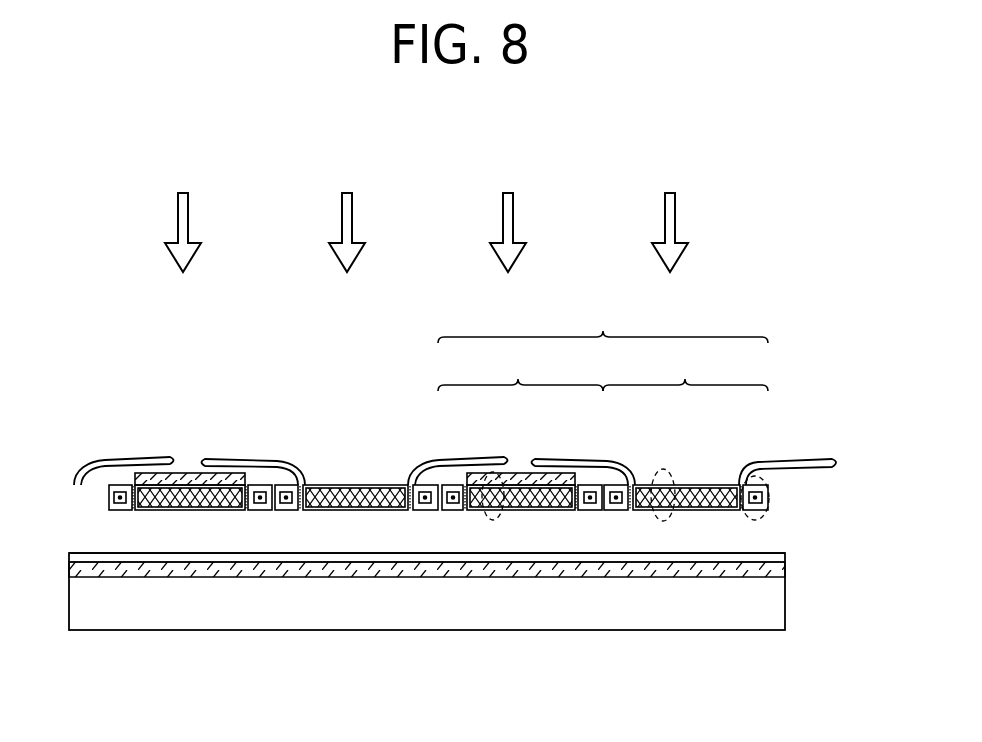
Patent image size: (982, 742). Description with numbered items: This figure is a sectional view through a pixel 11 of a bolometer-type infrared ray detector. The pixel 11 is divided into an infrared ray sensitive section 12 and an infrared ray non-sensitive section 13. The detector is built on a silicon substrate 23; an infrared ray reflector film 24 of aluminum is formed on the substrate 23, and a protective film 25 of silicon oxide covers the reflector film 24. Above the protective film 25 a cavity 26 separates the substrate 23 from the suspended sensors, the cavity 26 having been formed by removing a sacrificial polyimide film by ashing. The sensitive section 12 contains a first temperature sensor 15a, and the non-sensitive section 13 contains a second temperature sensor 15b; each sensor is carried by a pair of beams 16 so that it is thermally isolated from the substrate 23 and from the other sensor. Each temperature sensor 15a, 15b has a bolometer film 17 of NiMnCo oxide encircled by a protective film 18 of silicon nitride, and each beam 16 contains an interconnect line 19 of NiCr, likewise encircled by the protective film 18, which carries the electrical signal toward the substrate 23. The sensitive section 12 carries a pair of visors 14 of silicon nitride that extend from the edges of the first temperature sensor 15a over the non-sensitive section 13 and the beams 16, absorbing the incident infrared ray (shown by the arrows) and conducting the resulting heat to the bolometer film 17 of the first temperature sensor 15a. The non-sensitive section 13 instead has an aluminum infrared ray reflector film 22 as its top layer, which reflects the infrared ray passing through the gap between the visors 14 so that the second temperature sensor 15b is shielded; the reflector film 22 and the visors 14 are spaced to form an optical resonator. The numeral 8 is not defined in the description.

The electron-emitting device 8 is at (528, 513).
The pixel 11 is at (603, 320).
The infrared ray sensitive section 12 is at (685, 371).
The infrared ray non-sensitive section 13 is at (520, 371).
The visor 14 is at (137, 460).
The first temperature sensor 15a is at (663, 521).
The second temperature sensor 15b is at (493, 520).
The beam 16 is at (766, 516).
The bolometer film 17 is at (545, 500).
The protective film 18 is at (770, 505).
The interconnect line 19 is at (770, 490).
The infrared ray reflector film 22 is at (187, 478).
The substrate 23 is at (215, 604).
The infrared ray reflector film 24 is at (775, 575).
The protective film 25 is at (775, 559).
The cavity 26 is at (137, 512).